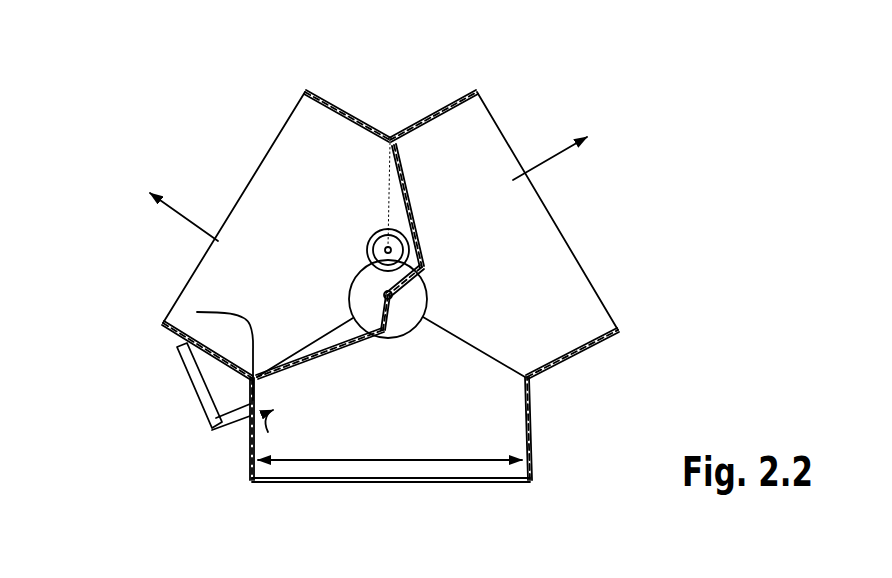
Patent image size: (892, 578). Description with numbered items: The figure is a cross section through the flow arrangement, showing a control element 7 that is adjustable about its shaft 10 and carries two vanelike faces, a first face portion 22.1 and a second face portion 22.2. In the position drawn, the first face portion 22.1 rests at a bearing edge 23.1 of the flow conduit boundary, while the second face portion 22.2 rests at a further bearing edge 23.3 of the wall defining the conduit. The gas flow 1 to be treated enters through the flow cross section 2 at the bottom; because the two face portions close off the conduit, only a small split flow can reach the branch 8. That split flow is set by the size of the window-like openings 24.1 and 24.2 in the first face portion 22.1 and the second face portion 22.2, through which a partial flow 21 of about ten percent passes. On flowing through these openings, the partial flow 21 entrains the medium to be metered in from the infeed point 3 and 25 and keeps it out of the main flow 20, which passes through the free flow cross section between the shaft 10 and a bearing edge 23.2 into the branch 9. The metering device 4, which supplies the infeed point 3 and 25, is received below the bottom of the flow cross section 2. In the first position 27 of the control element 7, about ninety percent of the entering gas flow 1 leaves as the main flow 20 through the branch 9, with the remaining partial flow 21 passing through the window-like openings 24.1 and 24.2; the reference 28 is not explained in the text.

The gas flow 1 is at (363, 430).
The flow cross section 2 is at (460, 460).
The infeed point 3 is at (277, 167).
The infeed point 25 is at (368, 248).
The metering device 4 is at (215, 392).
The control element 7 is at (370, 172).
The branch 8 is at (207, 283).
The branch 9 is at (493, 120).
The shaft 10 is at (352, 272).
The main flow 20 is at (540, 163).
The partial flow 21 is at (190, 223).
The first face portion 22.1 is at (313, 363).
The second face portion 22.2 is at (413, 212).
The bearing edge 23.1 is at (163, 317).
The bearing edge 23.2 is at (526, 376).
The further bearing edge 23.3 is at (400, 147).
The window-like opening 24.1 is at (395, 338).
The window-like opening 24.2 is at (425, 288).
The first position 27 is at (492, 376).
The left vertical wall 28 is at (250, 437).